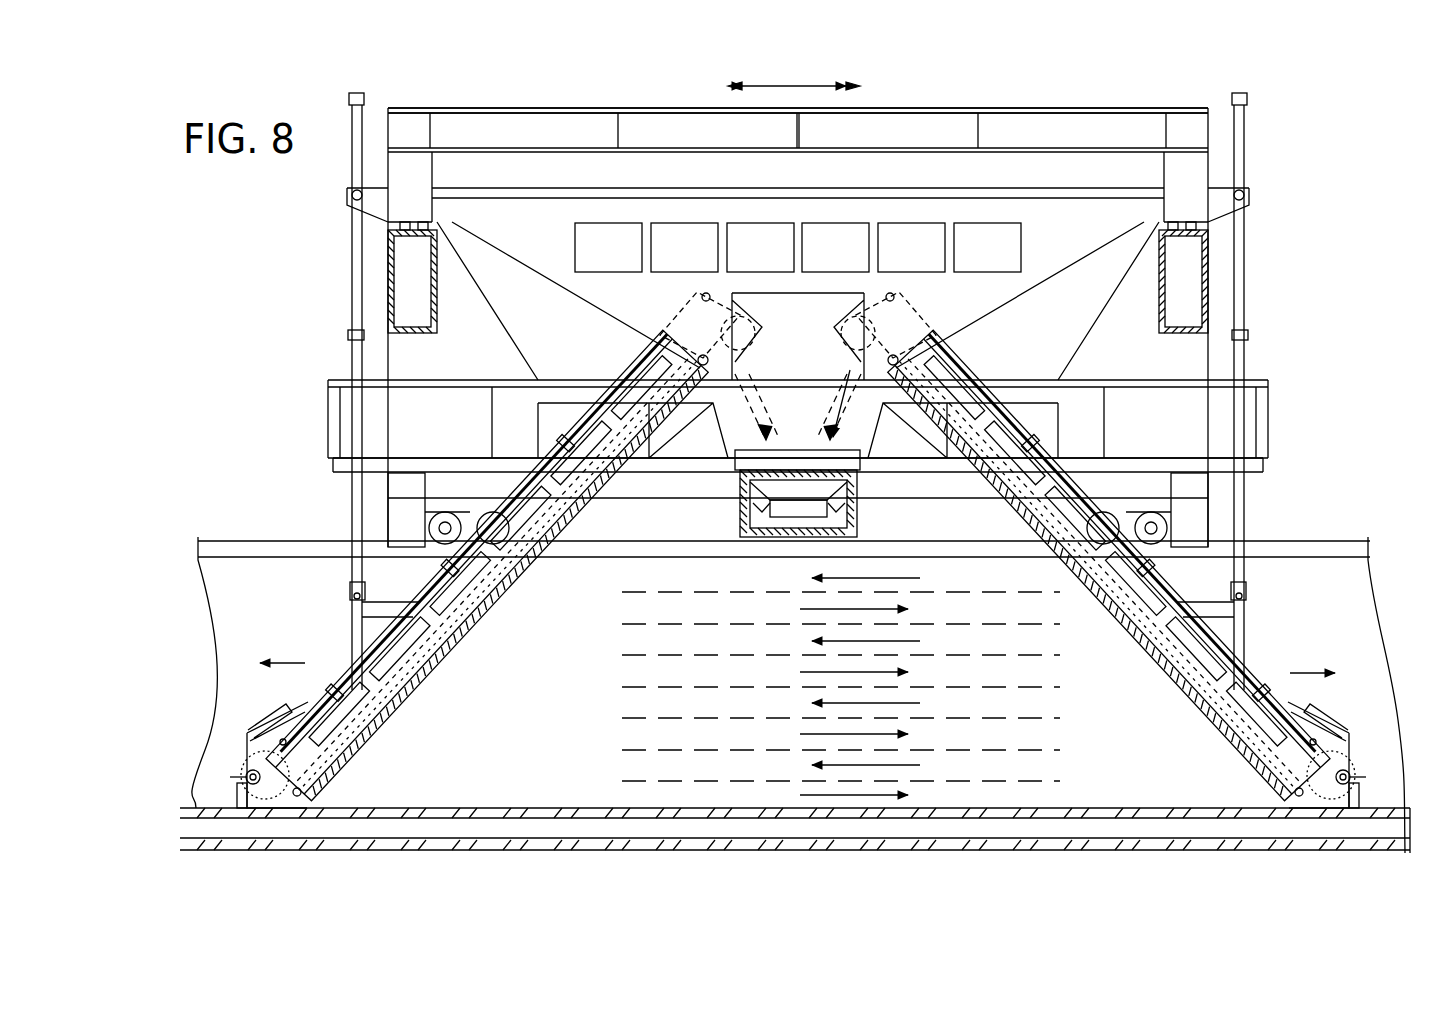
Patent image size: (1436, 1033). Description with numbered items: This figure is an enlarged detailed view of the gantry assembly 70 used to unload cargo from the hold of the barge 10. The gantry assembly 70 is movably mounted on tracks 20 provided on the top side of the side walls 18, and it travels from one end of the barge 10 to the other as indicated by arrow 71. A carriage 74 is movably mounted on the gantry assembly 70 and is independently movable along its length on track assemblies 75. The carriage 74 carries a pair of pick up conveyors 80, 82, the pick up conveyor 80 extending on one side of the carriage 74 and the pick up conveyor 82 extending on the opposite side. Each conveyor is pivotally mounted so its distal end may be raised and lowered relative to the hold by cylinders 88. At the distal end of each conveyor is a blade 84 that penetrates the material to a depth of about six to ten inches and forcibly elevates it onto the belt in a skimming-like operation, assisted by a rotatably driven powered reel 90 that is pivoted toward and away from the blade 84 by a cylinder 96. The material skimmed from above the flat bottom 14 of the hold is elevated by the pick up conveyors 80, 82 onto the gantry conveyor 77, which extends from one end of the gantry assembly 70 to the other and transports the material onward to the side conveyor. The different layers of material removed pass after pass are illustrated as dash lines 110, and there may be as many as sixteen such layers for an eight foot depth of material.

The barge 10 is at (268, 540).
The flat bottom 14 is at (483, 808).
The side walls 18 is at (594, 686).
The tracks 20 is at (1297, 538).
The gantry assembly 70 is at (1275, 145).
The arrow 71 is at (803, 83).
The carriage 74 is at (1063, 108).
The track assemblies 75 is at (413, 218).
The conveyor 77 is at (808, 492).
The pick up conveyor 80 is at (1262, 676).
The pick up conveyor 82 is at (347, 663).
The blade 84 is at (268, 808).
The cylinders 88 is at (350, 250).
The powered reel 90 is at (247, 776).
The cylinder 96 is at (287, 718).
The dash lines 110 is at (660, 592).